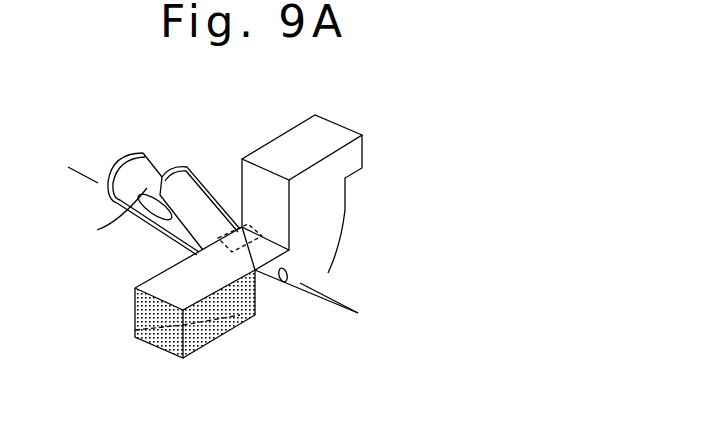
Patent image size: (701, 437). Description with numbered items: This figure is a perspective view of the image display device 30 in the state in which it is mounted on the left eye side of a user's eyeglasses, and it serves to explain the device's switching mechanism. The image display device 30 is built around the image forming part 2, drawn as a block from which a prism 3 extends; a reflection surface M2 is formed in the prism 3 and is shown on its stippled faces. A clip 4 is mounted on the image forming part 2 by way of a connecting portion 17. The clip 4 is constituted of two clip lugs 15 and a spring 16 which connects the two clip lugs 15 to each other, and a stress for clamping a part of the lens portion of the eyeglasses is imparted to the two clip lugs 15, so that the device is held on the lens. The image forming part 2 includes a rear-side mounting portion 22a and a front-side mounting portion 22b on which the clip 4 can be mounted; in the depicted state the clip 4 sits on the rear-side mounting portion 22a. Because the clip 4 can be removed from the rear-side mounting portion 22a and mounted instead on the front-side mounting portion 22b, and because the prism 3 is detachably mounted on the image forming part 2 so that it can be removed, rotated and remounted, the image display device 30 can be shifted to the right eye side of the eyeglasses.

The image forming part 2 is at (347, 190).
The prism 3 is at (160, 285).
The clip 4 is at (148, 171).
The clip lugs 15 is at (112, 166).
The spring 16 is at (97, 230).
The connecting portion 17 is at (200, 238).
The rear-side mounting portion 22a is at (268, 267).
The front-side mounting portion 22b is at (288, 277).
The image display device 30 is at (258, 127).
The reflection surface M2 is at (155, 350).